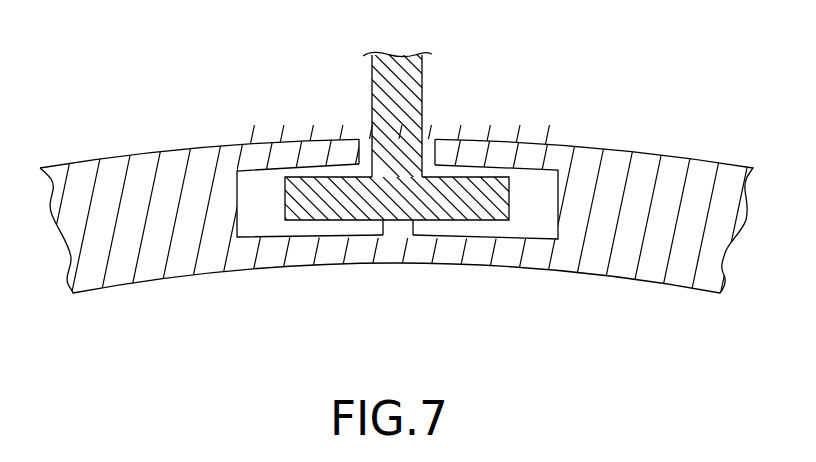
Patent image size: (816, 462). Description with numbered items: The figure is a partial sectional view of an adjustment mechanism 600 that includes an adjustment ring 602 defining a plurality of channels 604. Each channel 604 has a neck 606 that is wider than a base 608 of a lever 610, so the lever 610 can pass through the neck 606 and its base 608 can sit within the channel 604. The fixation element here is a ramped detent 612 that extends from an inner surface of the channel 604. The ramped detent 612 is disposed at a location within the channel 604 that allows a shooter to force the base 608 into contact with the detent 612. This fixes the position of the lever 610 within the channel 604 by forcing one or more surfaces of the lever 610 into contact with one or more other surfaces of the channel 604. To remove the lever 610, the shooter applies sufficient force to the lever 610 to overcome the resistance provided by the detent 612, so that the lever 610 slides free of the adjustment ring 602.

The adjustment mechanism 600 is at (397, 192).
The adjustment ring 602 is at (600, 262).
The channel 604 is at (255, 222).
The neck 606 is at (345, 121).
The base 608 is at (353, 200).
The lever 610 is at (407, 92).
The ramped detent 612 is at (399, 246).